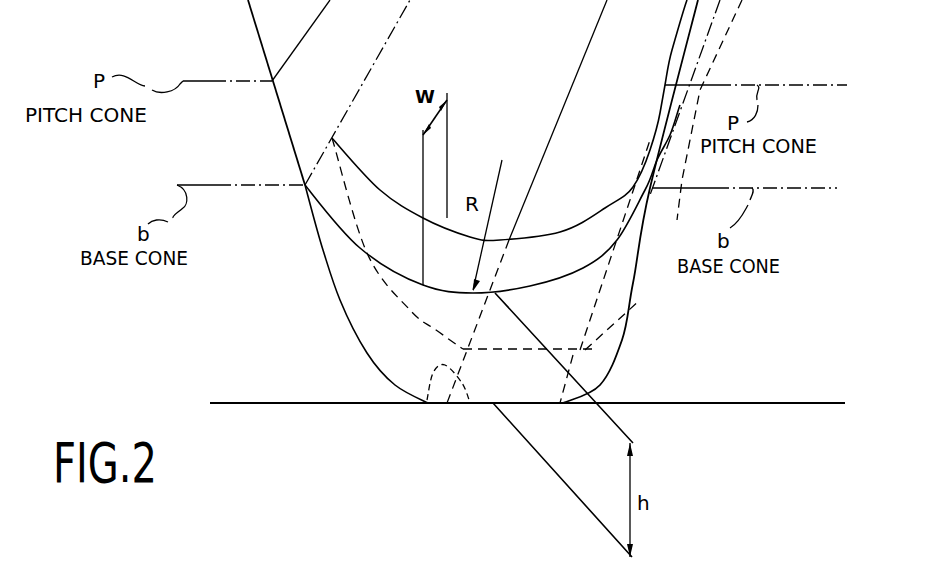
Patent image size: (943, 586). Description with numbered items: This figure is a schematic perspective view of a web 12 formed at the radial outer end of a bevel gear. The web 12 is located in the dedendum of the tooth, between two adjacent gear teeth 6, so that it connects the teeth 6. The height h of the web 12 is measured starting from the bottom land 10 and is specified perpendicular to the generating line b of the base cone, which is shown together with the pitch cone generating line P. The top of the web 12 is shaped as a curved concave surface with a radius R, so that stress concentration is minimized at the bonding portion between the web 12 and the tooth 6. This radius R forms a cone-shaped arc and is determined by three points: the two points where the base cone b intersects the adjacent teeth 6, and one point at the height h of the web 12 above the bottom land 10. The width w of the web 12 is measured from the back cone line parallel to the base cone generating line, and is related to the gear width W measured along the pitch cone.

The gear tooth 6 is at (212, 142).
The bottom land 10 is at (432, 376).
The web 12 is at (556, 245).